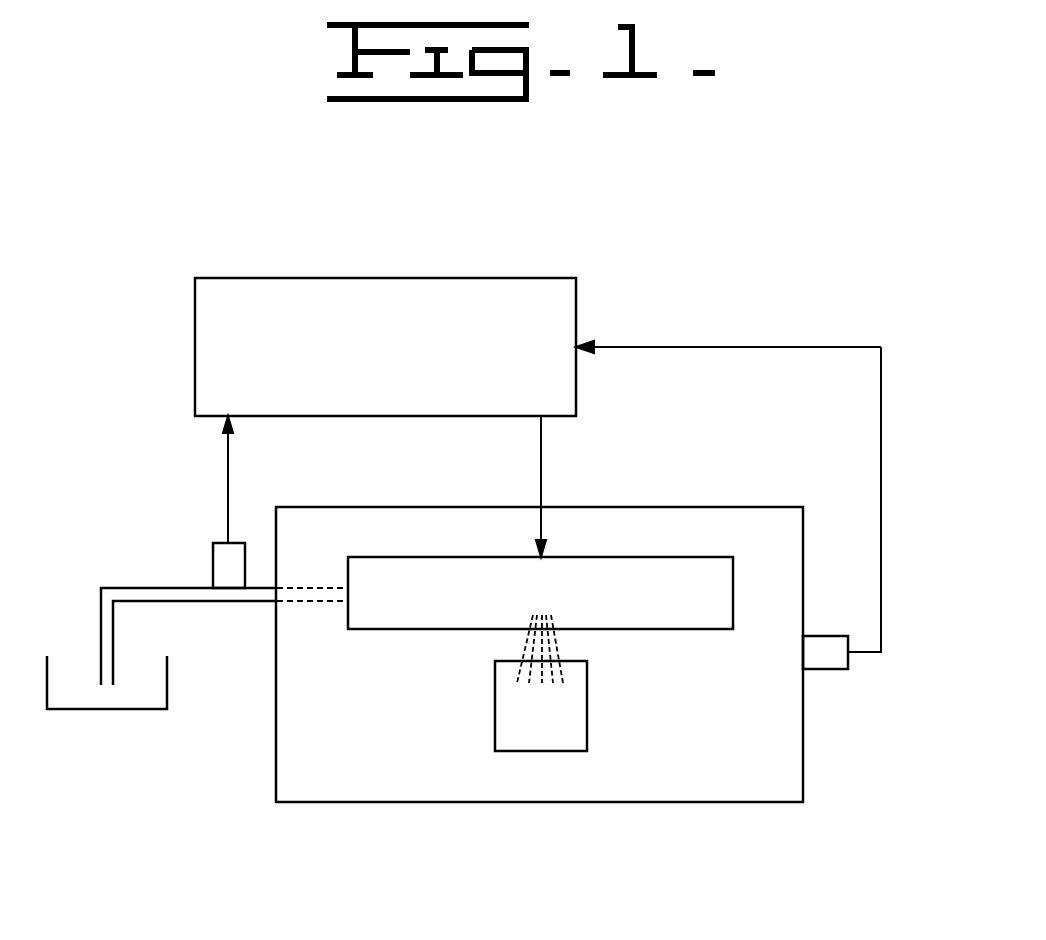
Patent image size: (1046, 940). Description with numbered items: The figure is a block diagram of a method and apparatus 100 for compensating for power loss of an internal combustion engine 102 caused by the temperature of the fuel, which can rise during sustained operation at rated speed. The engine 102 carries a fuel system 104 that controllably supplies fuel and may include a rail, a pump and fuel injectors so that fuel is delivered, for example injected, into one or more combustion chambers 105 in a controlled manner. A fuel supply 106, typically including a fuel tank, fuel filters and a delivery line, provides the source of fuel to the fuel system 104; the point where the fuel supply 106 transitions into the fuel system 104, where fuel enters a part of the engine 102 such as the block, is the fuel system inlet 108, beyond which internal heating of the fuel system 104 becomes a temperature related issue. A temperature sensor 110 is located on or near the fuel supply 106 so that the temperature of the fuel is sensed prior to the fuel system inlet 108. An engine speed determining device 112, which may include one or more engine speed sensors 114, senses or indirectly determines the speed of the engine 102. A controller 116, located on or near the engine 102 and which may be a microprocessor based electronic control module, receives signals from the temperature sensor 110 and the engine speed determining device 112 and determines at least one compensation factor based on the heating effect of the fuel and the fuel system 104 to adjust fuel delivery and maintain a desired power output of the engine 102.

The method and apparatus 100 is at (167, 207).
The internal combustion engine 102 is at (487, 803).
The fuel system 104 is at (397, 629).
The combustion chamber 105 is at (495, 738).
The fuel supply 106 is at (127, 710).
The fuel system inlet 108 is at (273, 603).
The temperature sensor 110 is at (213, 572).
The engine speed determining device 112 is at (883, 677).
The engine speed sensor 114 is at (814, 669).
The controller 116 is at (195, 353).